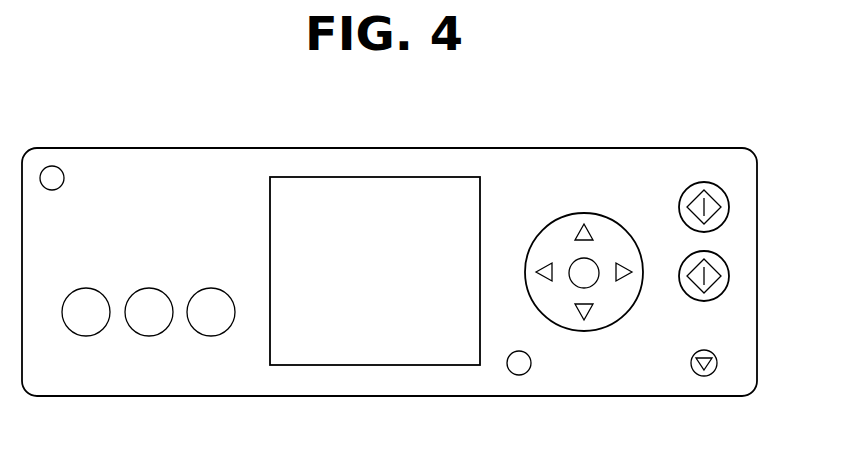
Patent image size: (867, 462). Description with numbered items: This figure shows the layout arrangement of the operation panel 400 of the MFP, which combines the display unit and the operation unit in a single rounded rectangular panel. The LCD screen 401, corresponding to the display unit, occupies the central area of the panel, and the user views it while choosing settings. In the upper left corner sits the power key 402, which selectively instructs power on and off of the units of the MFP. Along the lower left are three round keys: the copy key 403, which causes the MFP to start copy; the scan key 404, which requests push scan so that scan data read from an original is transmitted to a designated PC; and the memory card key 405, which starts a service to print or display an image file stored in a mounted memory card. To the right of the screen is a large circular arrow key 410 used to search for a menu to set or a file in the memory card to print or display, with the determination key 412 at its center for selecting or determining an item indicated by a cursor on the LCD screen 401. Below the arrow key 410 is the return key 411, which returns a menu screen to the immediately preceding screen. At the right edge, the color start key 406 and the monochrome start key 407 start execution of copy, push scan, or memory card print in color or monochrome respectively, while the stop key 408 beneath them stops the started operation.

The operation panel 400 is at (650, 148).
The LCD screen 401 is at (386, 177).
The power key 402 is at (52, 166).
The copy key 403 is at (88, 336).
The scan key 404 is at (150, 336).
The memory card key 405 is at (212, 336).
The color start key 406 is at (730, 206).
The monochrome start key 407 is at (730, 275).
The stop key 408 is at (705, 376).
The arrow key 410 is at (584, 213).
The return key 411 is at (519, 375).
The determination key 412 is at (594, 284).